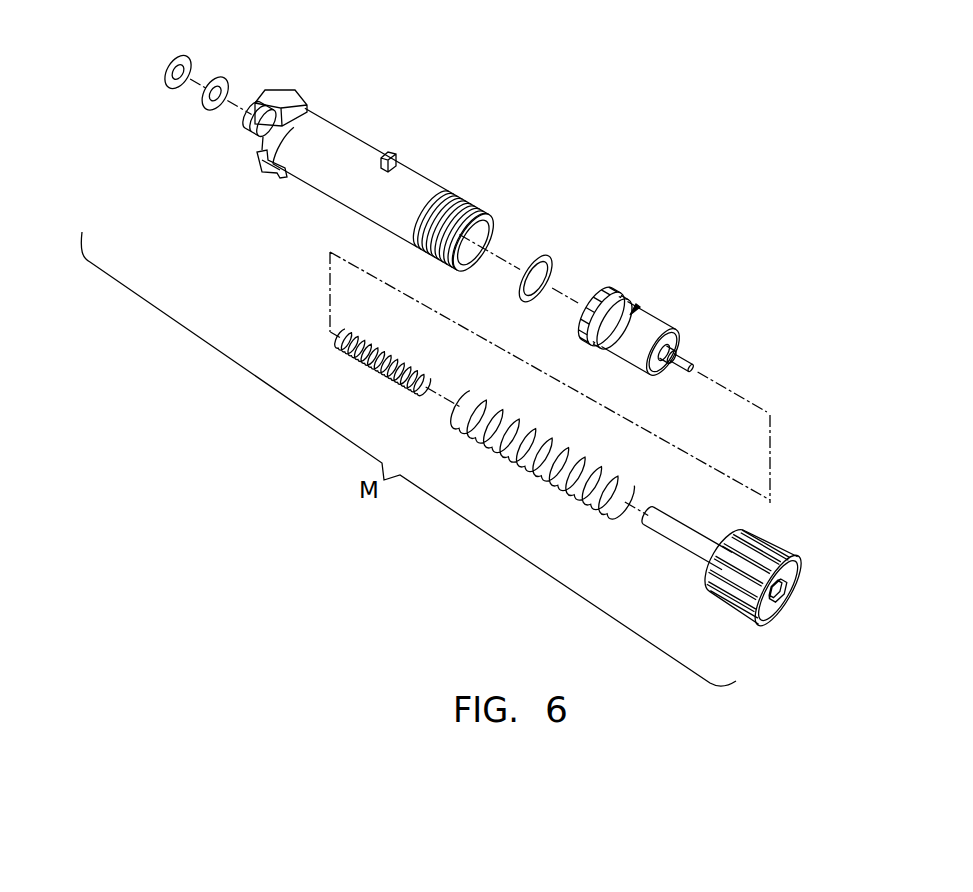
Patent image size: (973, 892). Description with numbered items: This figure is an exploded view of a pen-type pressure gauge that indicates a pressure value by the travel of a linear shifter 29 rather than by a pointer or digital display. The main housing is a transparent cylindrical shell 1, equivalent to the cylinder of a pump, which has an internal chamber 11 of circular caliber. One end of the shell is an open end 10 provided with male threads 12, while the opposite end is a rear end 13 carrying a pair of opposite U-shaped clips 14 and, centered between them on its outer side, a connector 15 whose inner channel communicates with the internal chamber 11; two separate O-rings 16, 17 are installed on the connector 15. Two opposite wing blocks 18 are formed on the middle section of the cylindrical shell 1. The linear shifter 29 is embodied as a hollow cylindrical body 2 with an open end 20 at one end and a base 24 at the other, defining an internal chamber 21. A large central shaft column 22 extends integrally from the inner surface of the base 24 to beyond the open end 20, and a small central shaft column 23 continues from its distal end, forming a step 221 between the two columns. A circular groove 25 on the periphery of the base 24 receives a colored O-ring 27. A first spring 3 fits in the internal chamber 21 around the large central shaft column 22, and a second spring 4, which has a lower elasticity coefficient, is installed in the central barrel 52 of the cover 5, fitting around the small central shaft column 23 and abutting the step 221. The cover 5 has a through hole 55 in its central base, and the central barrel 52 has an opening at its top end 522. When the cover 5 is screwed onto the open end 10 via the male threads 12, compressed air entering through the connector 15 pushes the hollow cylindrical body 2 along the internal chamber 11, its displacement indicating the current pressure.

The cylindrical shell 1 is at (336, 147).
The open end 10 is at (489, 232).
The internal chamber 11 is at (489, 267).
The male threads 12 is at (449, 194).
The rear end 13 is at (256, 159).
The U-shaped clips 14 is at (279, 96).
The connector 15 is at (246, 126).
The O-ring 16 is at (200, 101).
The O-ring 17 is at (165, 77).
The wing blocks 18 is at (393, 156).
The hollow cylindrical body 2 is at (640, 331).
The open end 20 is at (668, 333).
The internal chamber 21 is at (652, 366).
The large central shaft column 22 is at (677, 338).
The step 221 is at (669, 373).
The small central shaft column 23 is at (686, 363).
The base 24 is at (594, 300).
The circular groove 25 is at (574, 334).
The colored O-ring 27 is at (552, 262).
The linear shifter 29 is at (640, 307).
The first spring 3 is at (502, 458).
The second spring 4 is at (350, 357).
The cover 5 is at (786, 569).
The central barrel 52 is at (688, 543).
The top end 522 is at (641, 524).
The through hole 55 is at (790, 589).